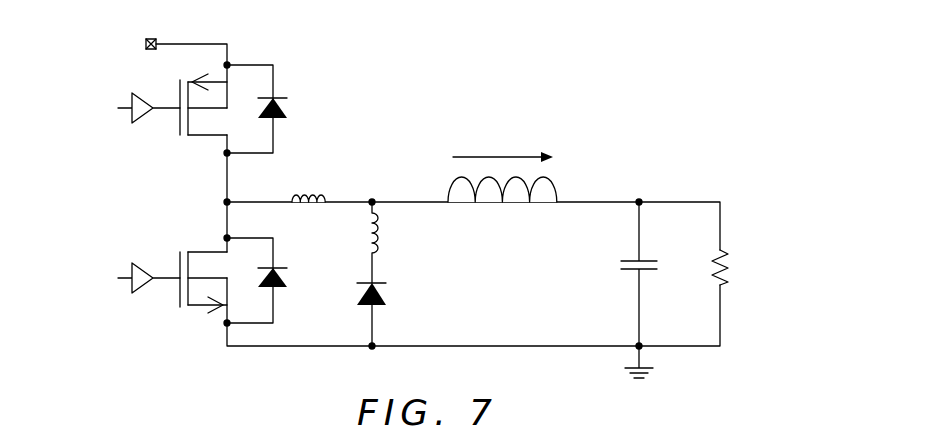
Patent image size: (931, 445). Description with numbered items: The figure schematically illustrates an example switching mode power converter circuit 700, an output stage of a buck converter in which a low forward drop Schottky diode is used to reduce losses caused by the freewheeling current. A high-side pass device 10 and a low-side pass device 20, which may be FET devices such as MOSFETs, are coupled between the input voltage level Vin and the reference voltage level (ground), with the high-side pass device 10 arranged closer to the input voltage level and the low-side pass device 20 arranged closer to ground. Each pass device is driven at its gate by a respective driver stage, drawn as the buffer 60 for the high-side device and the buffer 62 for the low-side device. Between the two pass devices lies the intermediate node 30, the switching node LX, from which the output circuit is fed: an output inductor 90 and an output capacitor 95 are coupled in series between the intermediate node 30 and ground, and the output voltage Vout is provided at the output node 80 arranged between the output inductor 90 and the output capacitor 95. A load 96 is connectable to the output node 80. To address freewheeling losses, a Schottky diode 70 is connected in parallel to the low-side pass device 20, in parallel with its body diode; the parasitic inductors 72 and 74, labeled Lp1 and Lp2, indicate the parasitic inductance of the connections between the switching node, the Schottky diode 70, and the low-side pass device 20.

The switching mode power converter circuit 700 is at (324, 48).
The high-side pass device 10 is at (170, 130).
The low-side pass device 20 is at (170, 300).
The intermediate node 30 is at (217, 202).
The high-side gate driver 60 is at (130, 102).
The low-side gate driver 62 is at (130, 270).
The Schottky diode 70 is at (388, 297).
The parasitic inductor 72 is at (385, 243).
The parasitic inductor 74 is at (327, 186).
The output node 80 is at (643, 194).
The output inductor 90 is at (562, 181).
The output capacitor 95 is at (620, 272).
The load 96 is at (735, 255).